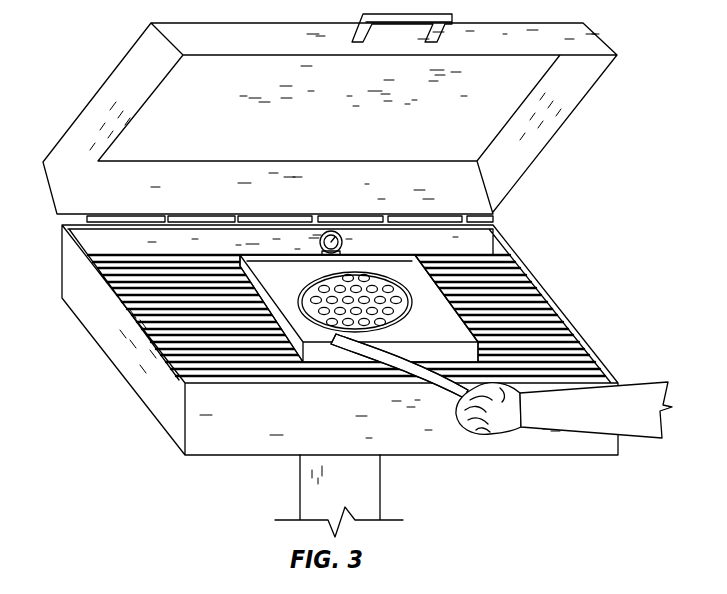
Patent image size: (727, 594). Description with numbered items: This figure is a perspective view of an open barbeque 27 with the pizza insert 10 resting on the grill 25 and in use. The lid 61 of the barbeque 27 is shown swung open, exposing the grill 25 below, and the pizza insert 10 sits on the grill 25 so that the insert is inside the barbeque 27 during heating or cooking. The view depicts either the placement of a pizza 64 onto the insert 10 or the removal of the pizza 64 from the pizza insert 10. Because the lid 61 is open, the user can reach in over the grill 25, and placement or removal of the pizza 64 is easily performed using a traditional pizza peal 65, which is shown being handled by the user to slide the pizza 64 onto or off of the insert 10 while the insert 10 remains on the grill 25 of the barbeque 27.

The pizza insert 10 is at (297, 314).
The grill 25 is at (510, 310).
The barbeque 27 is at (169, 410).
The lid 61 is at (137, 65).
The pizza 64 is at (397, 296).
The pizza peal 65 is at (422, 365).